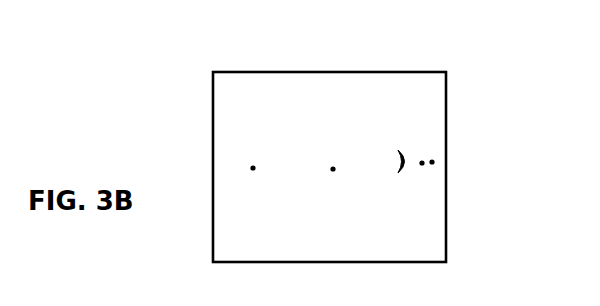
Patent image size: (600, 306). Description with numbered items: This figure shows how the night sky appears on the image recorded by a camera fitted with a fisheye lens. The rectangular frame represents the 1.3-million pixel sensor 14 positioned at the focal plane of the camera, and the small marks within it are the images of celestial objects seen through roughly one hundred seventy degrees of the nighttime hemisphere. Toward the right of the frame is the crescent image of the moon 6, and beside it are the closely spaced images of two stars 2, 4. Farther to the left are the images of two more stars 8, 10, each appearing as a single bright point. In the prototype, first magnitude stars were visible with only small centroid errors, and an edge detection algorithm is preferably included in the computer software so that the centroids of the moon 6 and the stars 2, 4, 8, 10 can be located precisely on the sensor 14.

The 1.3-million pixel sensor 14 is at (432, 72).
The star 10 is at (254, 192).
The star 8 is at (334, 192).
The moon 6 is at (405, 196).
The star 2 is at (445, 168).
The star 4 is at (429, 176).